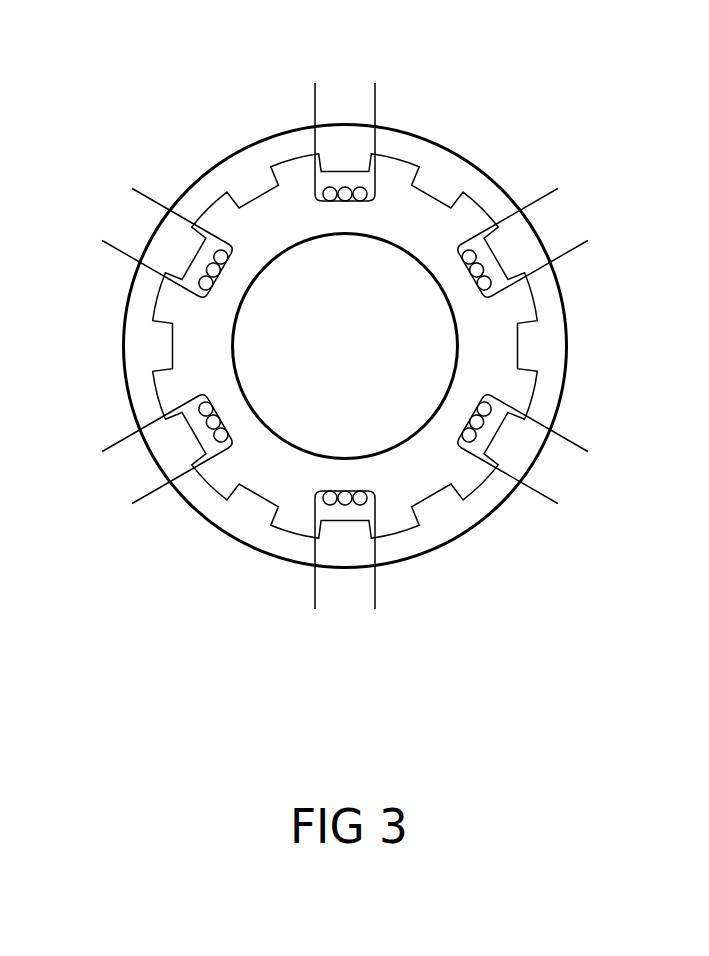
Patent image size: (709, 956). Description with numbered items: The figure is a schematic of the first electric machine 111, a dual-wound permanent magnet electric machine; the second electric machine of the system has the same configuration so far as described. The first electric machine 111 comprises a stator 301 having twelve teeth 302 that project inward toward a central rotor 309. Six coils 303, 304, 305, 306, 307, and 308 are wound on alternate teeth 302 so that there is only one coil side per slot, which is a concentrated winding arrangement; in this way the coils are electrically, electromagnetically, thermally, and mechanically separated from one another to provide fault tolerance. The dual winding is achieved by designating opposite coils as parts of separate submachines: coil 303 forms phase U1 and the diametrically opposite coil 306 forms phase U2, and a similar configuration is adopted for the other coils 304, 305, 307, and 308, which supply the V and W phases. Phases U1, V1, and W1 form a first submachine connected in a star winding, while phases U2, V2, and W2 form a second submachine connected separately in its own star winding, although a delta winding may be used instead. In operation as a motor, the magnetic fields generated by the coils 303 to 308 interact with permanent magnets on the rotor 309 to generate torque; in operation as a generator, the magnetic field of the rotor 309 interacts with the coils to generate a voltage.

The first electric machine 111 is at (126, 72).
The stator 301 is at (461, 153).
The teeth 302 is at (435, 500).
The coil 303 is at (315, 84).
The coil 304 is at (588, 241).
The coil 305 is at (587, 450).
The coil 306 is at (375, 606).
The coil 307 is at (102, 452).
The coil 308 is at (102, 241).
The rotor 309 is at (369, 359).